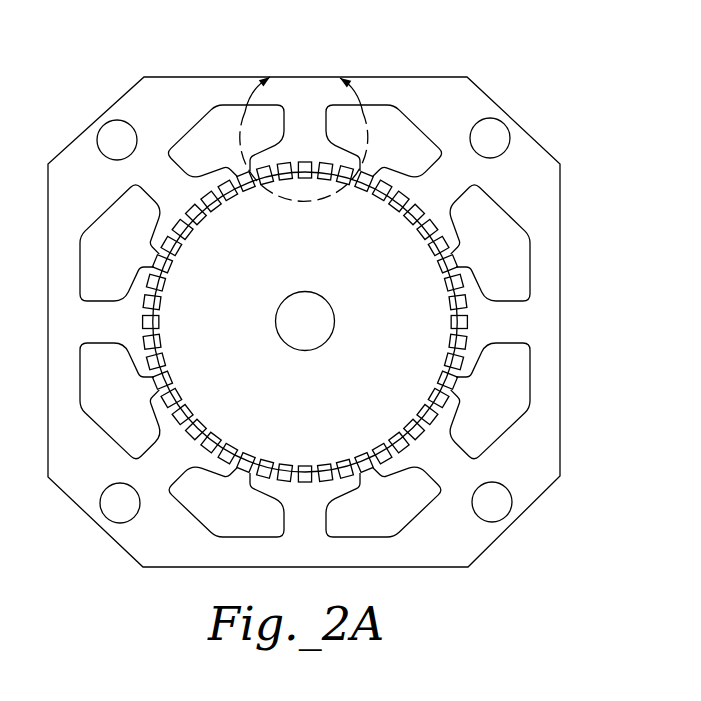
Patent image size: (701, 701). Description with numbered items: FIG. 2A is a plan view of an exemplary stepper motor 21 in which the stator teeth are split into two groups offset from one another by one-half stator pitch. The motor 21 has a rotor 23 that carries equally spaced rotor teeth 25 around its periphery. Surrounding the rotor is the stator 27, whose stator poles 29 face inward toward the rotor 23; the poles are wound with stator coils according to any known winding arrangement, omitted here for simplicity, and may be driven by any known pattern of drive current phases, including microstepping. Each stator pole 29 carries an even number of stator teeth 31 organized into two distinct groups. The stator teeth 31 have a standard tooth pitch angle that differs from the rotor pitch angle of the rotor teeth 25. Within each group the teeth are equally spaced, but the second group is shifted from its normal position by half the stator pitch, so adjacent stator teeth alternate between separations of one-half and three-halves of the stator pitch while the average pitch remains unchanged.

The stepper motor 21 is at (432, 32).
The rotor 23 is at (231, 319).
The rotor teeth 25 is at (412, 215).
The stator 27 is at (173, 76).
The stator poles 29 is at (157, 186).
The stator teeth 31 is at (440, 412).